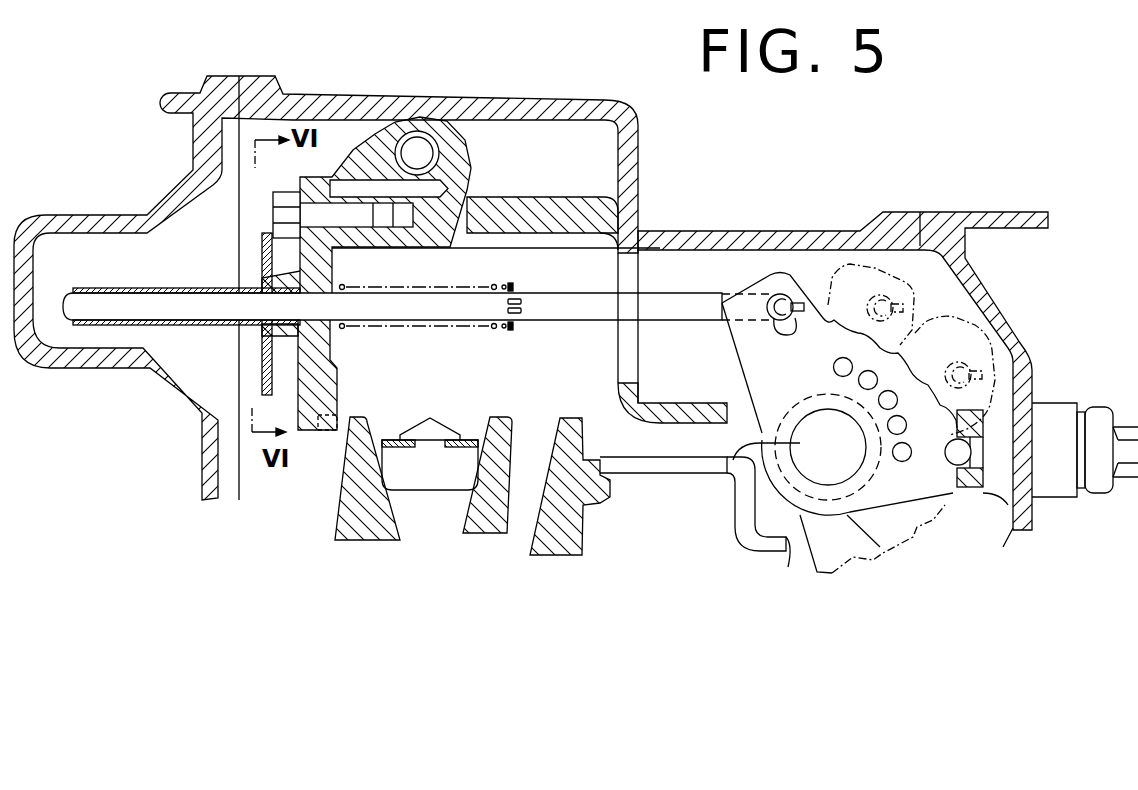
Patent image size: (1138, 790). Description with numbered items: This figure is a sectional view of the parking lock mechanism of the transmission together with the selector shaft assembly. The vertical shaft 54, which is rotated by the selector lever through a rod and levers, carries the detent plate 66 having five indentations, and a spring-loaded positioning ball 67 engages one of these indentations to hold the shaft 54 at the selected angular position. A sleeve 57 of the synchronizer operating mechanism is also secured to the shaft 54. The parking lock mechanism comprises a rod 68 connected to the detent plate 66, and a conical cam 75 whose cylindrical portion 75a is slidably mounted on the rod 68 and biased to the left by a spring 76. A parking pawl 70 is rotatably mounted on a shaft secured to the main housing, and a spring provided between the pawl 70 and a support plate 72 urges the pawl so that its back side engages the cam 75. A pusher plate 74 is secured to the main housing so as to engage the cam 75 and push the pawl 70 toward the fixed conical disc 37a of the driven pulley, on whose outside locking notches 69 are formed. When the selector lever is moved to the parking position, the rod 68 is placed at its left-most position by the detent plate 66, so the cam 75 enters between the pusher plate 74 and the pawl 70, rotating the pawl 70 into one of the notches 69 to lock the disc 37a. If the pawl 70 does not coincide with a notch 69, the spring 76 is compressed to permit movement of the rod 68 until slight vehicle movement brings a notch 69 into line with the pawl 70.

The cylindrical portion 75a is at (100, 289).
The conical cam 75 is at (207, 289).
The pusher plate 74 is at (333, 177).
The support plate 72 is at (263, 373).
The parking pawl 70 is at (337, 382).
The fixed conical disc 37a is at (370, 423).
The spring 76 is at (493, 333).
The rod 68 is at (587, 323).
The detent plate 66 is at (775, 277).
The sleeve 57 is at (802, 400).
The vertical shaft 54 is at (730, 467).
The locking notches 69 is at (336, 462).
The positioning ball 67 is at (973, 490).